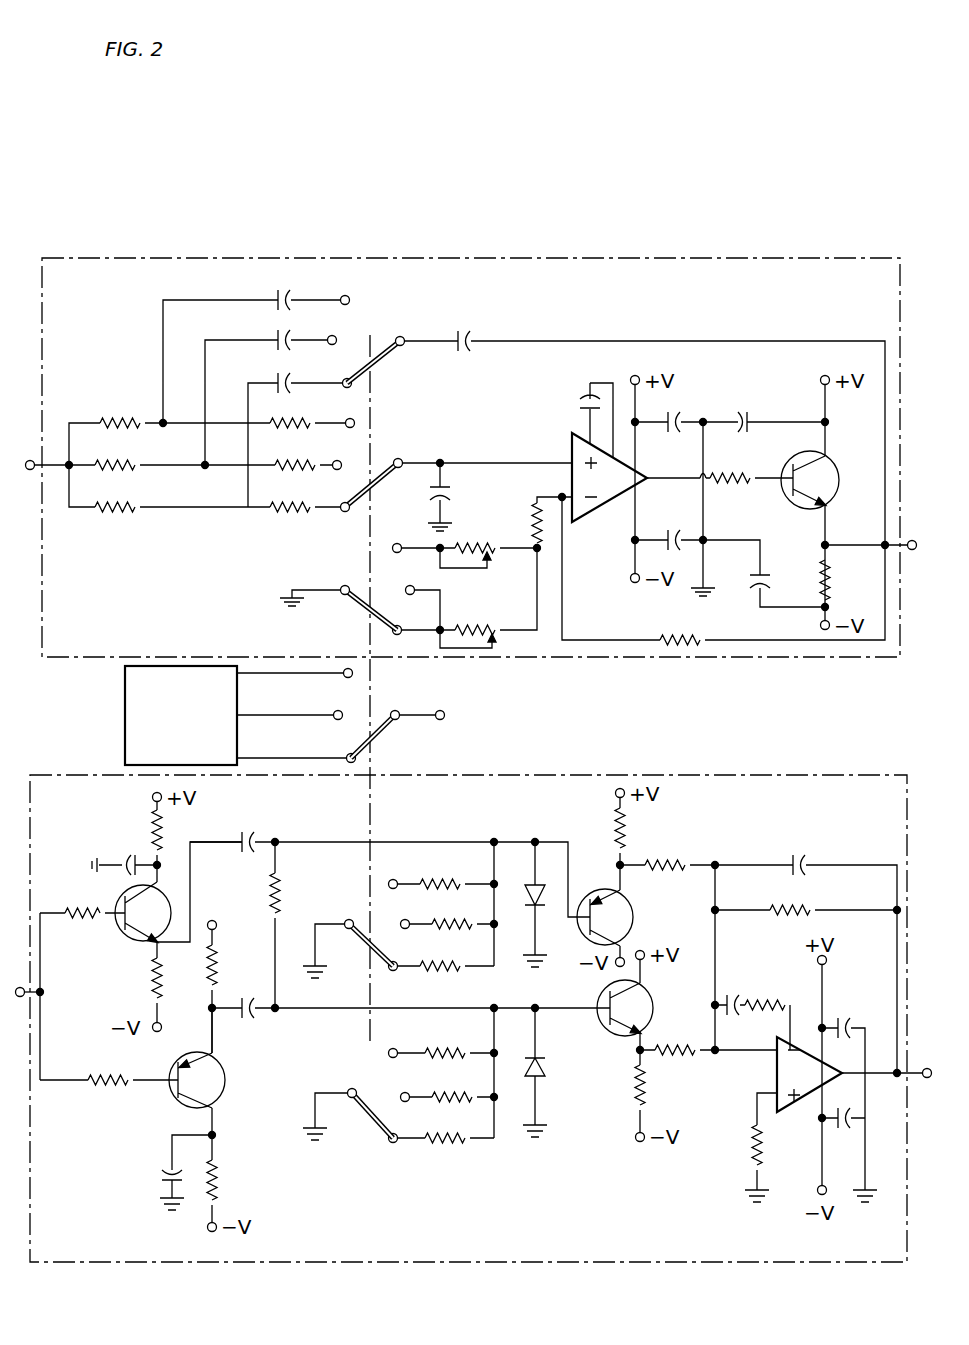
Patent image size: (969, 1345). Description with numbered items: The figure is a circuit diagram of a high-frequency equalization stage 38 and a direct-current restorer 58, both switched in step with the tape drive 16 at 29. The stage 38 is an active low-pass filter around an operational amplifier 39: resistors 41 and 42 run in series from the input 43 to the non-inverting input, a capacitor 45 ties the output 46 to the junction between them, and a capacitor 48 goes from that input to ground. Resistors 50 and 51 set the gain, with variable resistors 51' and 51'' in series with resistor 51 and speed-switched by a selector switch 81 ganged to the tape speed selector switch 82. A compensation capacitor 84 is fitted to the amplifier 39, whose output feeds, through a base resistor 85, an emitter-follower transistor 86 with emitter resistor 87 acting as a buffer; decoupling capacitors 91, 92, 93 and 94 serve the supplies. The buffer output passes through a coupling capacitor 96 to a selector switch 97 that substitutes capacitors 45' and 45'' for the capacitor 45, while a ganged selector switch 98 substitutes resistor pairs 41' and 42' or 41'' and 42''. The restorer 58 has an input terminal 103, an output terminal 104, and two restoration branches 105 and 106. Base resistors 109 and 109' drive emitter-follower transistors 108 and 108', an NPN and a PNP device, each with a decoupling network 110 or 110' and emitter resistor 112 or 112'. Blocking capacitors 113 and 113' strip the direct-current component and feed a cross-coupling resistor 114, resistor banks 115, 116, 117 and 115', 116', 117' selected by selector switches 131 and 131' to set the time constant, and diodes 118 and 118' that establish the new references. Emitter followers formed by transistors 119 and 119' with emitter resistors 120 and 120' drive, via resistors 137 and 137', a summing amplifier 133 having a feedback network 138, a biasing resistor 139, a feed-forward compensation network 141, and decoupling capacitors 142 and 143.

The tape drive system 16 is at (125, 704).
The tape drive speed switching 29 is at (383, 694).
The high-frequency equalization stage 38 is at (621, 309).
The operational amplifier 39 is at (610, 514).
The resistor 41 is at (110, 525).
The substitute resistor 41' is at (108, 451).
The substitute resistor 41'' is at (120, 410).
The resistor 42 is at (290, 525).
The substitute resistor 42' is at (308, 451).
The substitute resistor 42'' is at (312, 409).
The input 43 is at (36, 456).
The capacitor 45 is at (289, 374).
The substitute capacitor 45' is at (283, 331).
The substitute capacitor 45'' is at (290, 290).
The output 46 is at (927, 528).
The capacitor 48 is at (450, 488).
The resistor 50 is at (662, 634).
The resistor 51 is at (518, 523).
The variable resistor 51' is at (465, 566).
The variable resistor 51'' is at (470, 598).
The selector switch 81 is at (347, 586).
The tape speed selector switch 82 is at (382, 734).
The compensation capacitor 84 is at (580, 402).
The base resistor 85 is at (753, 490).
The transistor 86 is at (826, 454).
The emitter resistor 87 is at (828, 586).
The decoupling capacitor 91 is at (680, 406).
The decoupling capacitor 92 is at (738, 406).
The decoupling capacitor 93 is at (670, 530).
The decoupling capacitor 94 is at (766, 602).
The coupling capacitor 96 is at (472, 338).
The selector switch 97 is at (384, 336).
The selector switch 98 is at (377, 458).
The input terminal 103 is at (24, 998).
The output terminal 104 is at (930, 1078).
The direct-current restoration branch 105 is at (212, 838).
The direct-current restoration branch 106 is at (242, 1048).
The transistor 108 is at (121, 918).
The transistor 108' is at (173, 1089).
The base resistor 109 is at (82, 896).
The base resistor 109' is at (109, 1064).
The decoupling network 110 is at (110, 840).
The decoupling network 110' is at (217, 1179).
The emitter resistor 112 is at (124, 990).
The emitter resistor 112' is at (237, 983).
The direct-current blocking capacitor 113 is at (280, 832).
The direct-current blocking capacitor 113' is at (262, 1022).
The cross-coupling resistor 114 is at (272, 892).
The resistor 115 is at (442, 869).
The resistor 115' is at (442, 1037).
The resistor 116 is at (446, 910).
The resistor 116' is at (447, 1082).
The resistor 117 is at (446, 906).
The resistor 117' is at (446, 1087).
The diode 118 is at (511, 881).
The diode 118' is at (564, 1072).
The transistor 119 is at (630, 917).
The transistor 119' is at (649, 998).
The emitter resistor 120 is at (649, 849).
The emitter resistor 120' is at (611, 1099).
The selector switch 131 is at (350, 927).
The selector switch 131' is at (350, 1131).
The summing amplifier 133 is at (776, 1074).
The resistor 137 is at (667, 850).
The resistor 137' is at (708, 1071).
The feedback network 138 is at (832, 880).
The biasing resistor 139 is at (752, 1150).
The feed-forward compensation network 141 is at (770, 988).
The decoupling capacitor 142 is at (830, 1016).
The decoupling capacitor 143 is at (853, 1124).
The direct-current restorer 58 is at (431, 1229).